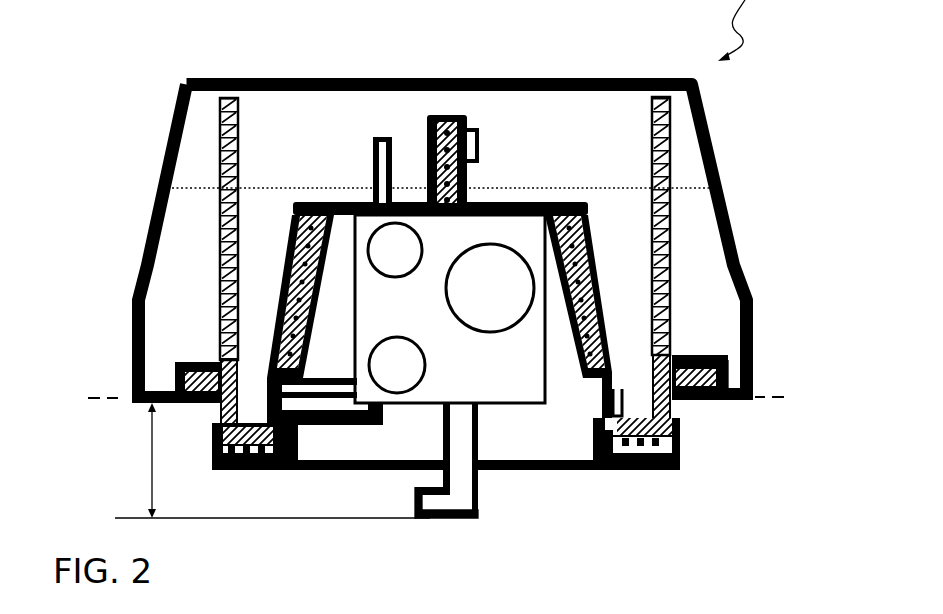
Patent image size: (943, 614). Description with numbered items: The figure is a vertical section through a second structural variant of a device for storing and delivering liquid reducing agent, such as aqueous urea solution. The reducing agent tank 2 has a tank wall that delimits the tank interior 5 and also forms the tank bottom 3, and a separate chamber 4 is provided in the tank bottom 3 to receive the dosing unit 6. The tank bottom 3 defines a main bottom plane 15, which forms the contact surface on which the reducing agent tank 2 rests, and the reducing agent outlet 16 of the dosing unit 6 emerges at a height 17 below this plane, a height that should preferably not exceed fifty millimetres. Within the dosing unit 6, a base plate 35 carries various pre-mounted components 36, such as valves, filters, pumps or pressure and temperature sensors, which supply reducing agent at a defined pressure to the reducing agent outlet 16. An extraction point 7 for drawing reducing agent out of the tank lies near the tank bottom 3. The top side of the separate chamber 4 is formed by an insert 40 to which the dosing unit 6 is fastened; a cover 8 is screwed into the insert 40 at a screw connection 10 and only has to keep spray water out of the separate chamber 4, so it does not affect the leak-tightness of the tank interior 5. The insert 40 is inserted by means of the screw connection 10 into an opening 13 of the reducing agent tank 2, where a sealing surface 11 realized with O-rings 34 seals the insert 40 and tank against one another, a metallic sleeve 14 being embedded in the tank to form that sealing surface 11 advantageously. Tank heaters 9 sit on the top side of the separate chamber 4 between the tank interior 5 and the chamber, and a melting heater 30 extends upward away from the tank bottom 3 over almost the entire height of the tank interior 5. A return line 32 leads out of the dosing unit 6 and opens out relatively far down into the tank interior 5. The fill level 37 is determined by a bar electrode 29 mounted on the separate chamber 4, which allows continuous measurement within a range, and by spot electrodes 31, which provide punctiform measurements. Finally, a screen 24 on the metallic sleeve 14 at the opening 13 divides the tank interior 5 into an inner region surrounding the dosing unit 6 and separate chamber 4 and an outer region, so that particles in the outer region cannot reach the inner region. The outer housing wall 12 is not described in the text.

The reducing agent tank 2 is at (715, 148).
The tank bottom 3 is at (728, 404).
The separate chamber 4 is at (547, 203).
The tank interior 5 is at (313, 122).
The dosing unit 6 is at (516, 395).
The extraction point 7 is at (265, 438).
The cover 8 is at (598, 470).
The tank heater 9 is at (427, 118).
The screw connection 10 is at (682, 420).
The sealing surface 11 is at (668, 444).
The outer wall 12 is at (168, 157).
The opening 13 is at (274, 460).
The metallic sleeve 14 is at (222, 410).
The main bottom plane 15 is at (110, 397).
The reducing agent outlet 16 is at (477, 498).
The height 17 is at (150, 458).
The screen 24 is at (218, 255).
The bar electrode 29 is at (374, 150).
The melting heater 30 is at (470, 108).
The spot electrode 31 is at (478, 130).
The return line 32 is at (325, 385).
The O-ring 34 is at (612, 460).
The base plate 35 is at (545, 374).
The components 36 is at (412, 278).
The fill level 37 is at (616, 188).
The insert 40 is at (567, 206).